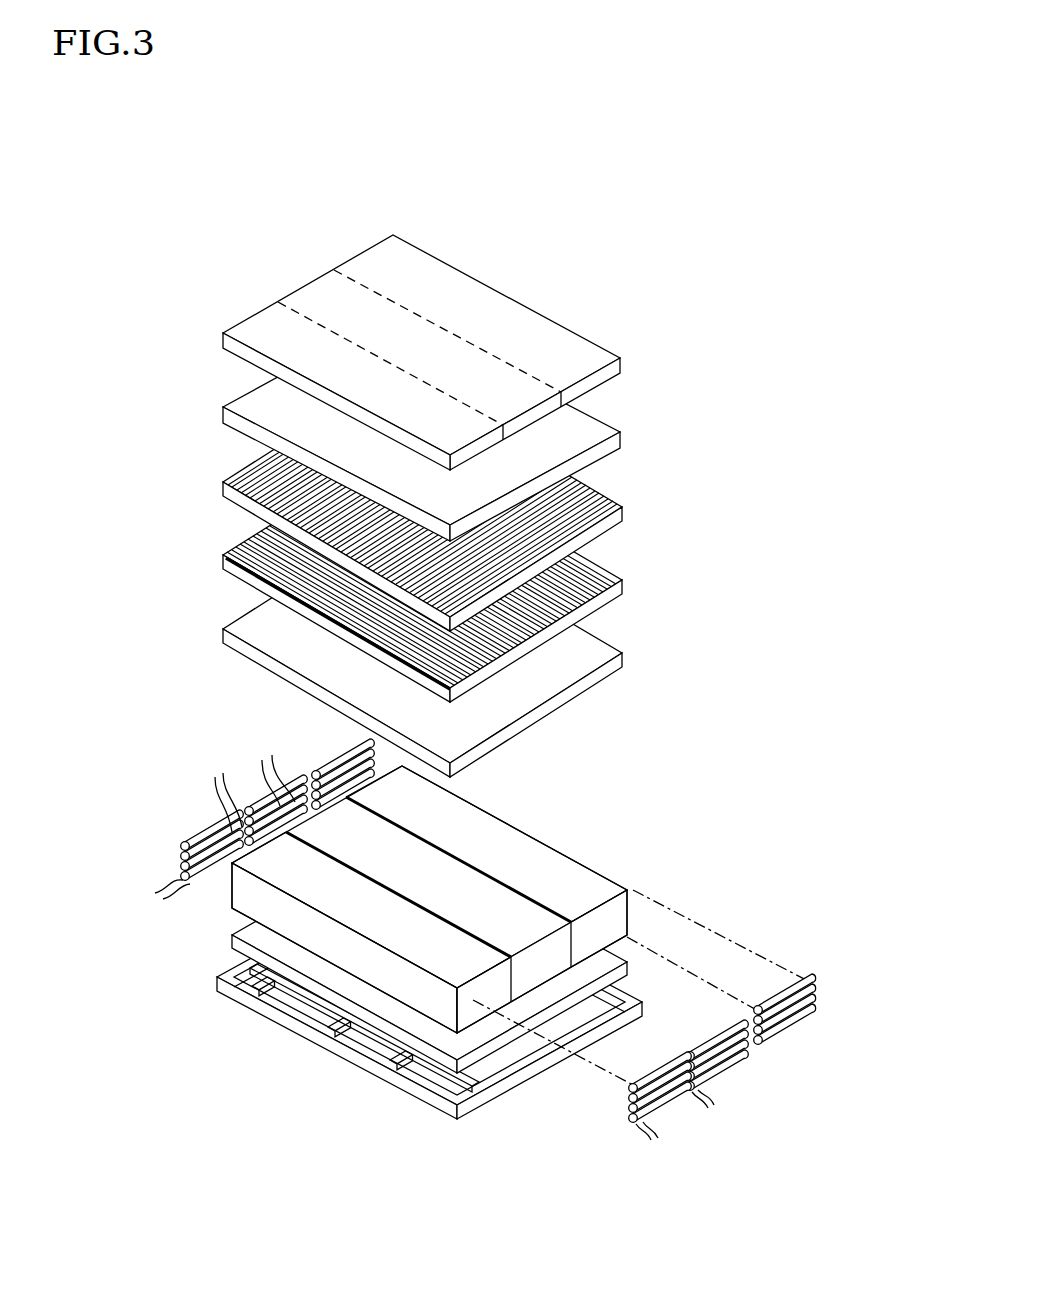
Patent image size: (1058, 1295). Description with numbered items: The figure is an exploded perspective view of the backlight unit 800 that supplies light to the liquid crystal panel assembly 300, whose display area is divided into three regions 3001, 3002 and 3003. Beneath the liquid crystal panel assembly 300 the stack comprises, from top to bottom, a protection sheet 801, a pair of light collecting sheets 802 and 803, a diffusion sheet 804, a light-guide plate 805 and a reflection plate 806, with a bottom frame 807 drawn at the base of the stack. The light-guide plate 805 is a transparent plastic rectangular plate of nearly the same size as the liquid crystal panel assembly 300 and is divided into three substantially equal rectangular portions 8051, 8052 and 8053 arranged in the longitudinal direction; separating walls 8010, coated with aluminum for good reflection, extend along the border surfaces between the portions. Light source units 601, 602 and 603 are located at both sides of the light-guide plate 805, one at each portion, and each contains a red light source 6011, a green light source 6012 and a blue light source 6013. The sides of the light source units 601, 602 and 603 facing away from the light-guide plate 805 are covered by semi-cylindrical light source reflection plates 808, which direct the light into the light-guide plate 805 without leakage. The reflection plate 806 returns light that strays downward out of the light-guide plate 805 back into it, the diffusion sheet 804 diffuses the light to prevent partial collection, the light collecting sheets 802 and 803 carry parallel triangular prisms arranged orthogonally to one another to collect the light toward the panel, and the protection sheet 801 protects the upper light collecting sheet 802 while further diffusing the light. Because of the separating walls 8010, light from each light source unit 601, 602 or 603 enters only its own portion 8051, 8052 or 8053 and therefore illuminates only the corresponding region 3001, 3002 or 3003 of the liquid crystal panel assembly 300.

The backlight unit 800 is at (540, 254).
The liquid crystal panel assembly 300 is at (429, 352).
The first region of the liquid crystal panel assembly 3001 is at (495, 322).
The second region of the liquid crystal panel assembly 3002 is at (445, 355).
The third region of the liquid crystal panel assembly 3003 is at (390, 392).
The protection sheet 801 is at (597, 438).
The light collecting sheet 802 is at (612, 498).
The light collecting sheet 803 is at (612, 573).
The diffusion sheet 804 is at (607, 648).
The light-guide plate 805 is at (445, 899).
The first portion of the light-guide plate 8051 is at (485, 837).
The second portion of the light-guide plate 8052 is at (430, 867).
The third portion of the light-guide plate 8053 is at (377, 907).
The separating walls 8010 is at (432, 907).
The reflection plate 806 is at (615, 948).
The bottom frame 807 is at (432, 1097).
The light source reflection plate 808 is at (334, 762).
The light source unit 601 is at (499, 932).
The light source unit 602 is at (210, 773).
The light source unit 603 is at (160, 913).
The red light source 6011 is at (767, 1020).
The green light source 6012 is at (770, 1032).
The blue light source 6013 is at (765, 1044).